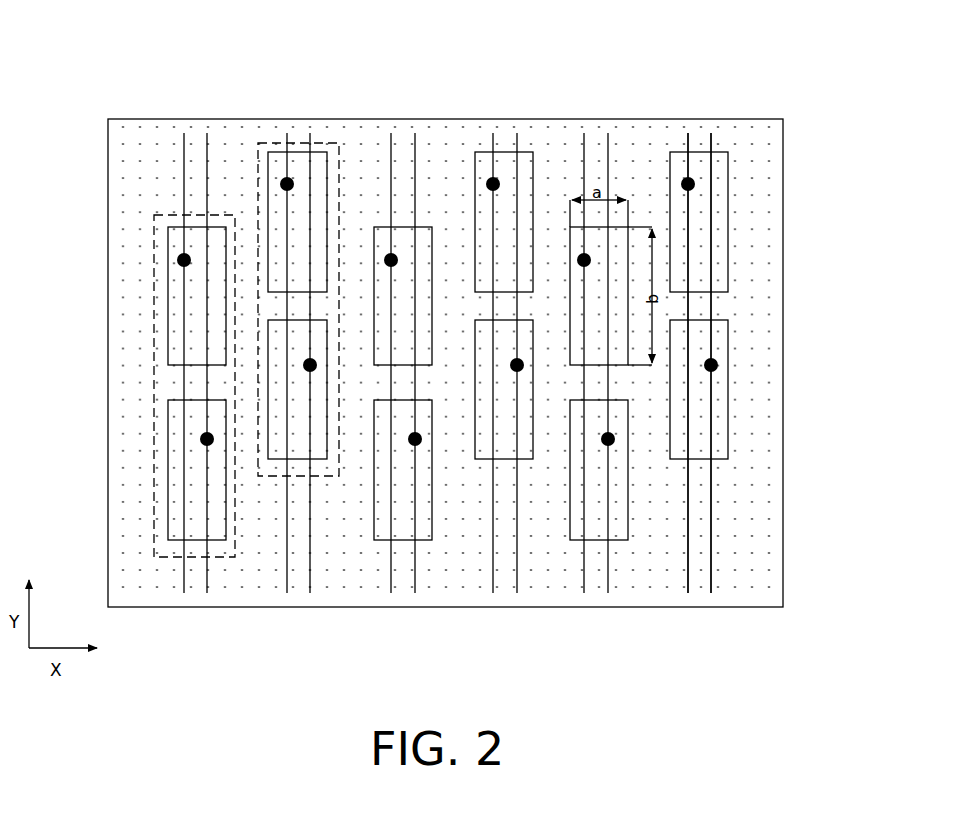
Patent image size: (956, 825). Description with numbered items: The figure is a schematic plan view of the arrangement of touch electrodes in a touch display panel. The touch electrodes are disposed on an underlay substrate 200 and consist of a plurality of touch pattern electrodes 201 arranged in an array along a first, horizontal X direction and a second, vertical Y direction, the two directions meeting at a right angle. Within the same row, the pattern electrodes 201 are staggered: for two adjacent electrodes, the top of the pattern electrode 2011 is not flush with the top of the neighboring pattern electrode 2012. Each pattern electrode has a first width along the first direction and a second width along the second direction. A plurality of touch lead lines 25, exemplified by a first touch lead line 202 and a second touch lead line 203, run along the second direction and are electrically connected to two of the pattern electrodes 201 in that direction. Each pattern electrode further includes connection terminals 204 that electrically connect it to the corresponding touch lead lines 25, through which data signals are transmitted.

The underlay substrate 200 is at (142, 119).
The pattern electrode 201 is at (517, 404).
The pattern electrode 2011 is at (728, 433).
The pattern electrode 2012 is at (628, 505).
The first touch lead line 202 is at (688, 133).
The second touch lead line 203 is at (711, 133).
The connection terminal 204 is at (494, 180).
The touch lead line 25 is at (777, 73).